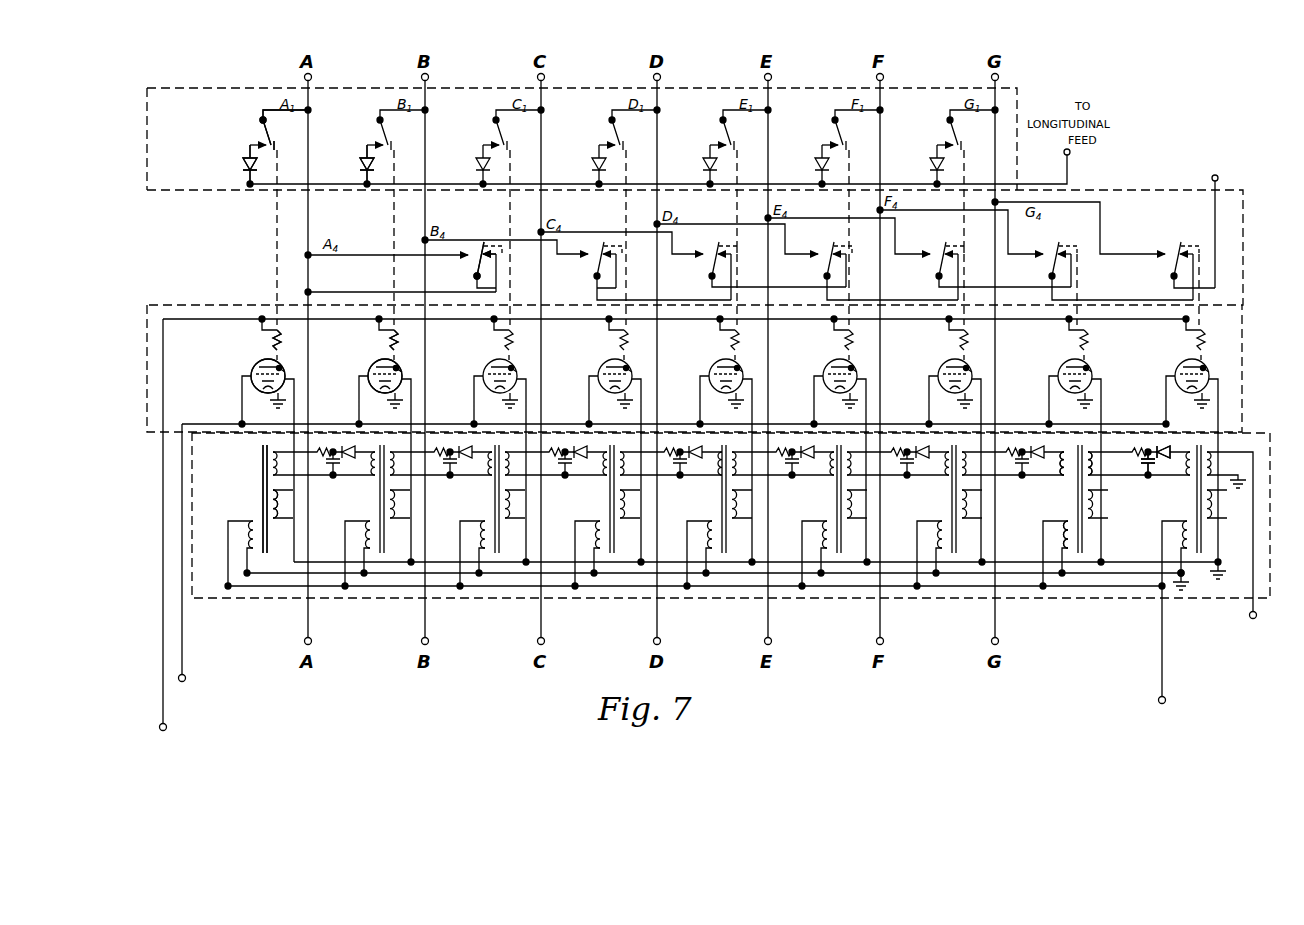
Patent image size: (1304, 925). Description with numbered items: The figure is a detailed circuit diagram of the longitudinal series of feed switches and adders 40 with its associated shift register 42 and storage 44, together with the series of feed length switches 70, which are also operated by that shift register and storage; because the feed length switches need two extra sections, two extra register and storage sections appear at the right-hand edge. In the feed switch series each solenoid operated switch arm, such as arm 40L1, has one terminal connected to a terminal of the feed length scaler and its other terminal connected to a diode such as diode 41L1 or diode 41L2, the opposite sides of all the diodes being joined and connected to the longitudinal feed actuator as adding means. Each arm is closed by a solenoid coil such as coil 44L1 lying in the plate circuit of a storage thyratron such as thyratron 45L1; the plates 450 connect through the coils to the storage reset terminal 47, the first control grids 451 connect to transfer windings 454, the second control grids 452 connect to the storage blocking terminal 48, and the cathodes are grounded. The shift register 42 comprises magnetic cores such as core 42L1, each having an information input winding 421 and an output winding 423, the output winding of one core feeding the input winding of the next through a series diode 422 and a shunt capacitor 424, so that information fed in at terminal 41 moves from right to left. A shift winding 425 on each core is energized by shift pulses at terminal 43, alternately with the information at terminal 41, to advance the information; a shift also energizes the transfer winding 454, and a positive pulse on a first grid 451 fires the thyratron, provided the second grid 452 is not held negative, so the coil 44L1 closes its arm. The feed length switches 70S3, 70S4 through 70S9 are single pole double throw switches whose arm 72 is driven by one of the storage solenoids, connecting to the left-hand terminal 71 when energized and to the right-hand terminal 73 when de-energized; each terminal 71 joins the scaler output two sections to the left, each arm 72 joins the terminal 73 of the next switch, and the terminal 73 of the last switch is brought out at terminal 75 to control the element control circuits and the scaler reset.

The longitudinal series of feed switches and adders 40 is at (918, 88).
The shift register information input terminal 41 is at (1249, 615).
The shift register 42 is at (1247, 432).
The shift pulse terminal 43 is at (1158, 700).
The storage 44 is at (1240, 382).
The storage reset terminal 47 is at (167, 727).
The storage blocking terminal 48 is at (186, 677).
The series of feed length switches 70 is at (1243, 262).
The output terminal 75 is at (1212, 179).
The solenoid operated switch arm 40L1 is at (262, 136).
The diode 41L1 is at (243, 166).
The diode 41L2 is at (358, 168).
The feed length switch 70S3 is at (537, 250).
The feed length switch 70S4 is at (653, 253).
The feed length switch 70S9 is at (1186, 266).
The left-hand terminal 71 is at (473, 259).
The switch arm 72 is at (475, 272).
The right-hand terminal 73 is at (499, 268).
The solenoid coil 44L1 is at (270, 343).
The thyratron 45L1 is at (250, 373).
The plate 450 is at (388, 352).
The first control grid 451 is at (400, 367).
The second control grid 452 is at (368, 374).
The magnetic storage core 42L1 is at (262, 490).
The transfer winding 454 is at (281, 510).
The information input winding 421 is at (1095, 469).
The series diode 422 is at (1152, 447).
The output winding 423 is at (1063, 470).
The shunt capacitor 424 is at (1152, 466).
The shift winding 425 is at (1066, 537).